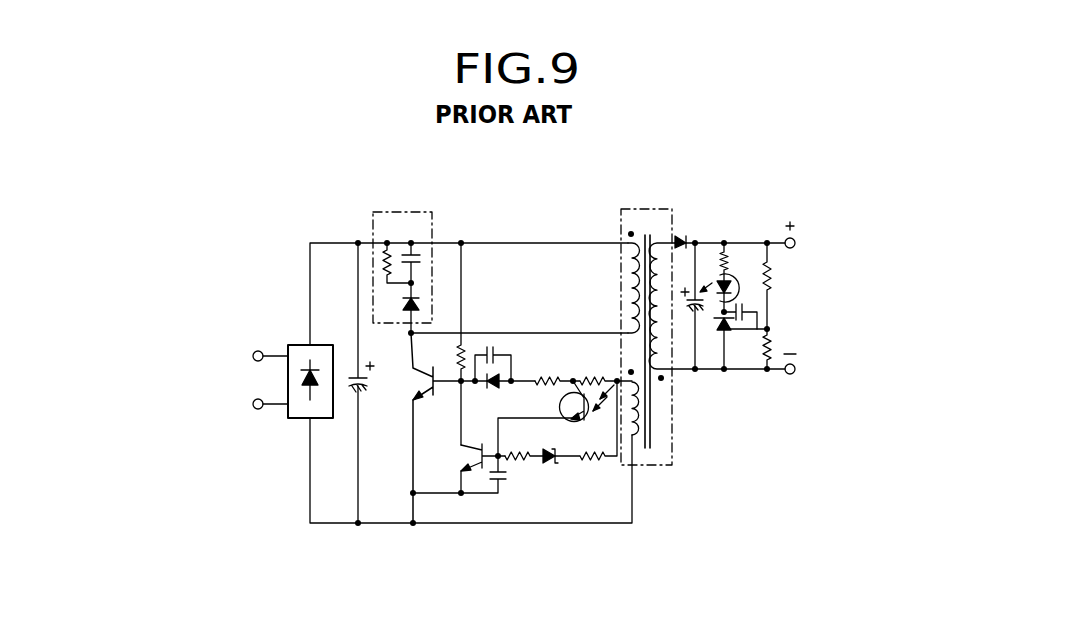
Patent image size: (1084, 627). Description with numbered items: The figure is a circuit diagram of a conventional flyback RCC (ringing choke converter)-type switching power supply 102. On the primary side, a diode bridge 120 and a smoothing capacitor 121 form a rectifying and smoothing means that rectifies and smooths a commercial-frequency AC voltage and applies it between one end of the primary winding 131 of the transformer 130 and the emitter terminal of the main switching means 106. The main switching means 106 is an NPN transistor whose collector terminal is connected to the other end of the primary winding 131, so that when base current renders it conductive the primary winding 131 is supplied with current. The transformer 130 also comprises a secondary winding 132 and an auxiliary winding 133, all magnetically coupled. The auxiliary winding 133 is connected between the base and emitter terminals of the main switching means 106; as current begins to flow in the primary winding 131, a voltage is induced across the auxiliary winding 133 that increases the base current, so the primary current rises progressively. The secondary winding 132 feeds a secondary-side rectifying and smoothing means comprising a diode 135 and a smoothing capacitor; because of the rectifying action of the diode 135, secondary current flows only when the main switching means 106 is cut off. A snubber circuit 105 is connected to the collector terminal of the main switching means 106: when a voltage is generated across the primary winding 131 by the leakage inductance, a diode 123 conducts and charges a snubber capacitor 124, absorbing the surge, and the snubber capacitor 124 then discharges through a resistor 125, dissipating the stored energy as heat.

The switching power supply 102 is at (311, 177).
The snubber circuit 105 is at (417, 208).
The main switching means 106 is at (410, 389).
The diode bridge 120 is at (295, 342).
The smoothing capacitor 121 is at (355, 396).
The diode 123 is at (422, 306).
The snubber capacitor 124 is at (421, 259).
The resistor 125 is at (385, 258).
The transformer 130 is at (660, 202).
The primary winding 131 is at (628, 270).
The secondary winding 132 is at (662, 345).
The auxiliary winding 133 is at (641, 413).
The diode 135 is at (679, 238).